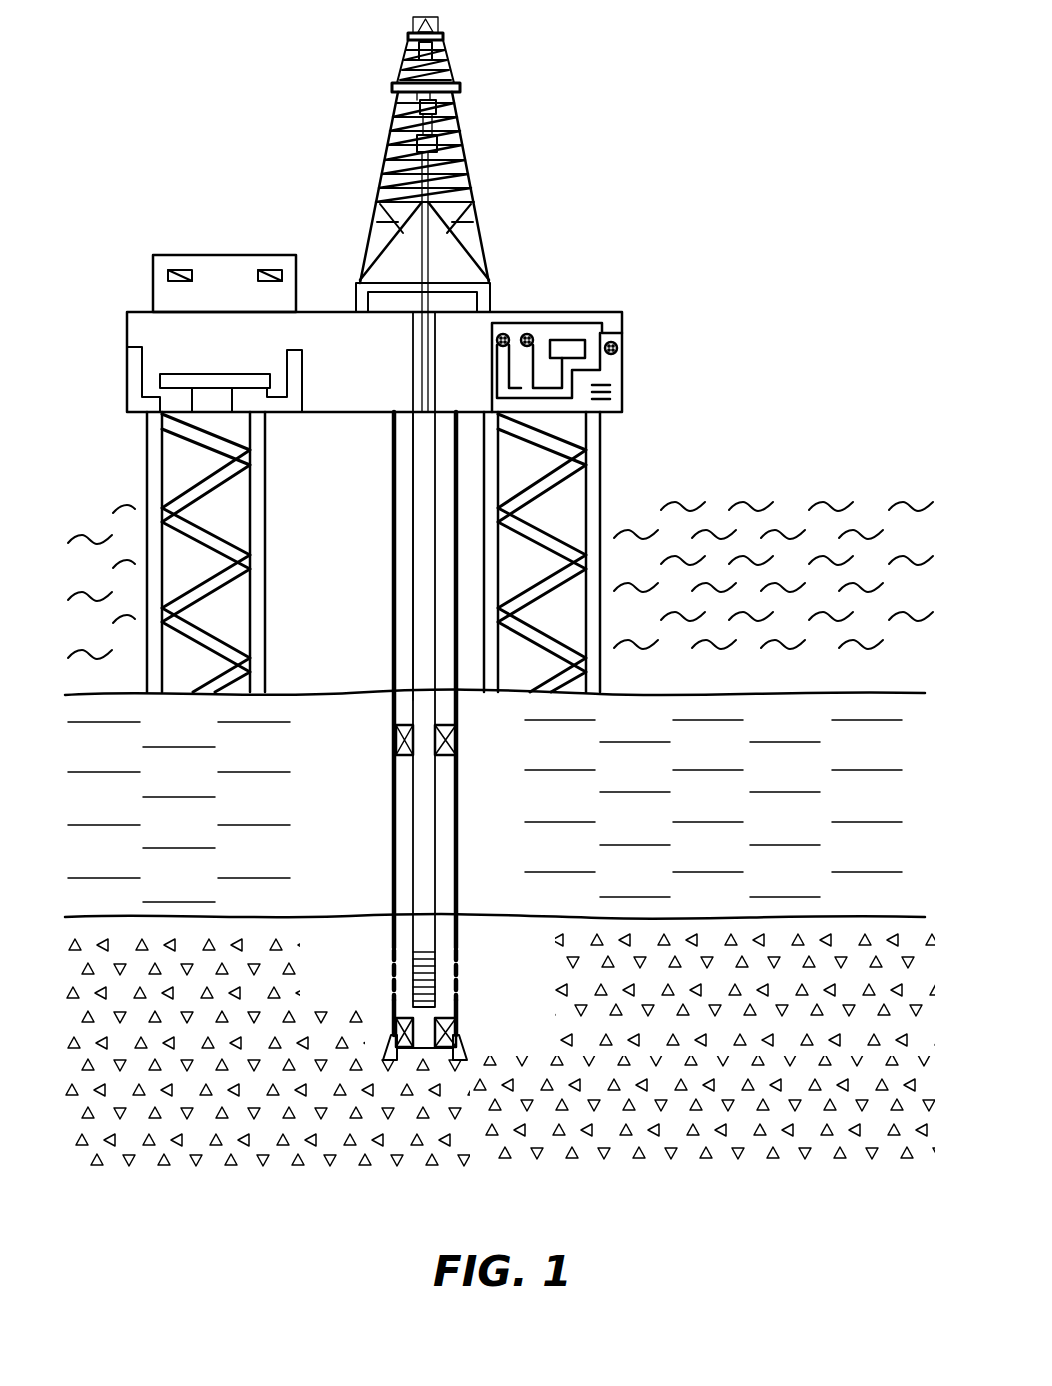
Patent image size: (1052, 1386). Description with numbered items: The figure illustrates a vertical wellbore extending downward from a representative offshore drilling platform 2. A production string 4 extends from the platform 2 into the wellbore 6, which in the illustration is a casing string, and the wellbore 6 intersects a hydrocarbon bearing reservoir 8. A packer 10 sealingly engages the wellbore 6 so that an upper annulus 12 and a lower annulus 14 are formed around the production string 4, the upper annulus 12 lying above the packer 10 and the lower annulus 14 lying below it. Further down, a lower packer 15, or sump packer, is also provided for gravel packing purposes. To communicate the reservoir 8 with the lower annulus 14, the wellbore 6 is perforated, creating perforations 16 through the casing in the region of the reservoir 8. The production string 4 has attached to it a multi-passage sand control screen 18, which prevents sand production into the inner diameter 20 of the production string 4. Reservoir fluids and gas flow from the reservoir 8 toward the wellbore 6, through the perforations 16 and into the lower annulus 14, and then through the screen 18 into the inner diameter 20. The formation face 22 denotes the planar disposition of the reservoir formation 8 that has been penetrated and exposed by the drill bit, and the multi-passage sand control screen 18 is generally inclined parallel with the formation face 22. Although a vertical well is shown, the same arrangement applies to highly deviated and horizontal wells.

The platform 2 is at (622, 326).
The production string 4 is at (412, 461).
The wellbore 6 is at (392, 496).
The hydrocarbon bearing reservoir 8 is at (680, 977).
The packer 10 is at (396, 745).
The upper annulus 12 is at (402, 602).
The lower annulus 14 is at (400, 857).
The lower packer 15 is at (457, 1030).
The perforations 16 is at (384, 1000).
The multi-passage sand control screen 18 is at (420, 955).
The inner diameter 20 is at (423, 545).
The formation face 22 is at (458, 916).